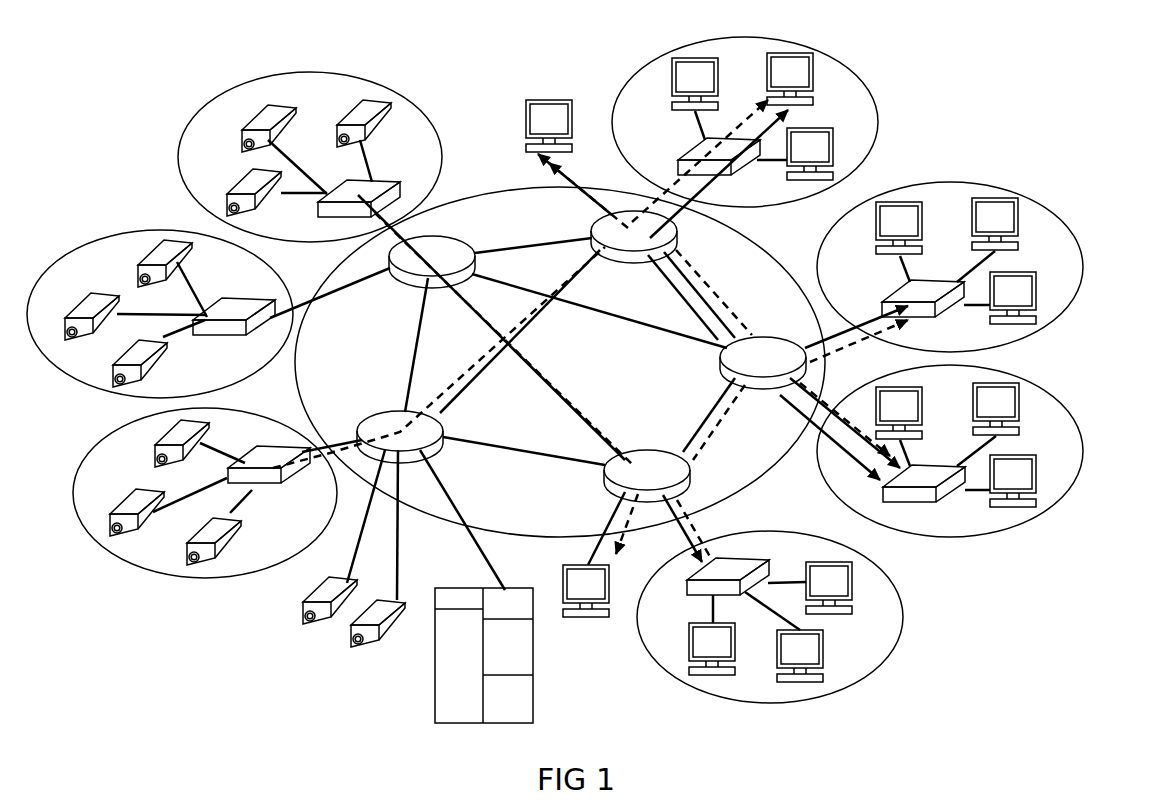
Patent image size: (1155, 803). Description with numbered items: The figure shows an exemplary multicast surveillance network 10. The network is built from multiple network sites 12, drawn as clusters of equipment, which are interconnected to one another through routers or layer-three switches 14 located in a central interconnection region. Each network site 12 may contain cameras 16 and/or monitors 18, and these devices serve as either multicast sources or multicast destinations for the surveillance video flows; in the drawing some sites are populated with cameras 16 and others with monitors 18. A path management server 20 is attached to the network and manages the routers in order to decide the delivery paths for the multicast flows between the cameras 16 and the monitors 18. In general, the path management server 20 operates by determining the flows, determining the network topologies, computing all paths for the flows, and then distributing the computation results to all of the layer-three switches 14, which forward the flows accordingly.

The multicast surveillance network 10 is at (996, 64).
The network site 12 is at (260, 78).
The router or layer-3 switch 14 is at (690, 478).
The camera 16 is at (242, 178).
The monitor 18 is at (1038, 290).
The path management server 20 is at (435, 704).